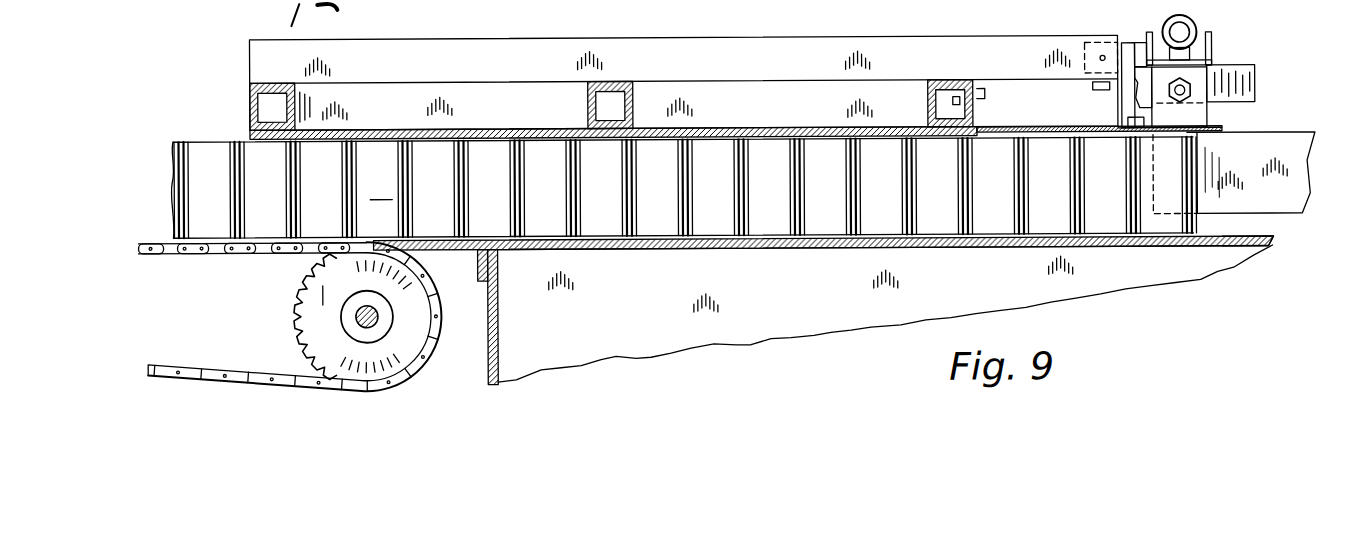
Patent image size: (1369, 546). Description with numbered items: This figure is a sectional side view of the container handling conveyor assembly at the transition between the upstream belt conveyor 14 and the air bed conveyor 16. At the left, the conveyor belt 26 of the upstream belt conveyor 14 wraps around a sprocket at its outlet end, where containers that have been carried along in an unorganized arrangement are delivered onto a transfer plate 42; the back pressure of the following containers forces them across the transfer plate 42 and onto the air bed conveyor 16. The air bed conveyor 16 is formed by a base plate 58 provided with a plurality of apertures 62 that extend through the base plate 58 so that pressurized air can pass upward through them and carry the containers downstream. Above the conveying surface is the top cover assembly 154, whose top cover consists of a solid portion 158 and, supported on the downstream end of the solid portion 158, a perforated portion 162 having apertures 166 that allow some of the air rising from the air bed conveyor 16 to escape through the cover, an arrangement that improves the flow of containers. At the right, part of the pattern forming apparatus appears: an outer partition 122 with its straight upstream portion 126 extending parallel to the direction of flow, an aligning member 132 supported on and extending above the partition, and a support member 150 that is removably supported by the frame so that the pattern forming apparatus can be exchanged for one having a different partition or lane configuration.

The upstream belt conveyor 14 is at (148, 167).
The air bed conveyor 16 is at (598, 305).
The conveyor belt 26 is at (348, 390).
The transfer plate 42 is at (445, 252).
The base plate 58 is at (797, 250).
The apertures 62 is at (725, 250).
The outer partitions 122 is at (1288, 151).
The straight upstream portion 126 is at (1285, 216).
The aligning members 132 is at (1195, 118).
The support member 150 is at (1252, 52).
The top cover assembly 154 is at (735, 110).
The solid portion 158 is at (781, 128).
The perforated portion 162 is at (1028, 130).
The apertures 166 is at (1068, 142).